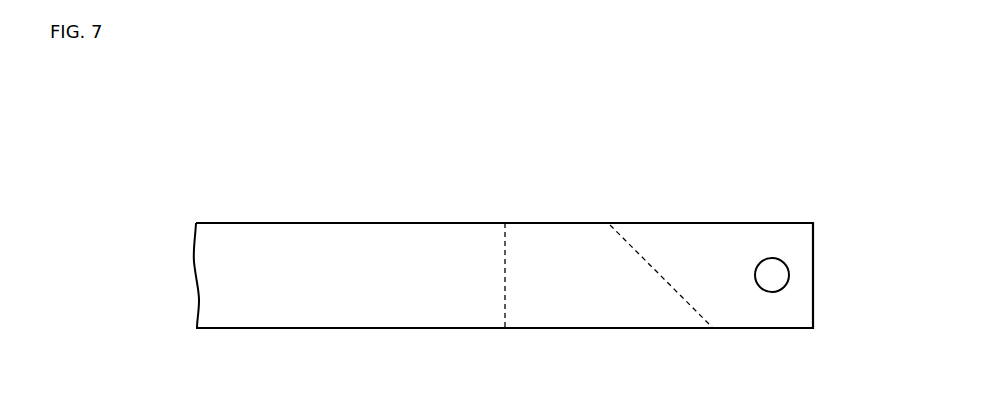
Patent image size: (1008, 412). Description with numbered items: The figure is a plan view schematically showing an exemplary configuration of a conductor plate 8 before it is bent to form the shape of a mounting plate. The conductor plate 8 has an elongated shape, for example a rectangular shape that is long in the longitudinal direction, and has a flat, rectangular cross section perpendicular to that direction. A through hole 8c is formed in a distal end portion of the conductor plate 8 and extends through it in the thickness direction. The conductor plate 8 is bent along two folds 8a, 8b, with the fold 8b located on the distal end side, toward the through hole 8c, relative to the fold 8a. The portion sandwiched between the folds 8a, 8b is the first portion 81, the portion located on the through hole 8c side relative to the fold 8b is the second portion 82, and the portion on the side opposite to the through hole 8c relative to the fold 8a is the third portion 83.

The conductor plate 8 is at (626, 174).
The first portion 81 is at (562, 237).
The second portion 82 is at (704, 237).
The third portion 83 is at (382, 237).
The fold 8a is at (505, 291).
The fold 8b is at (690, 313).
The through hole 8c is at (772, 260).